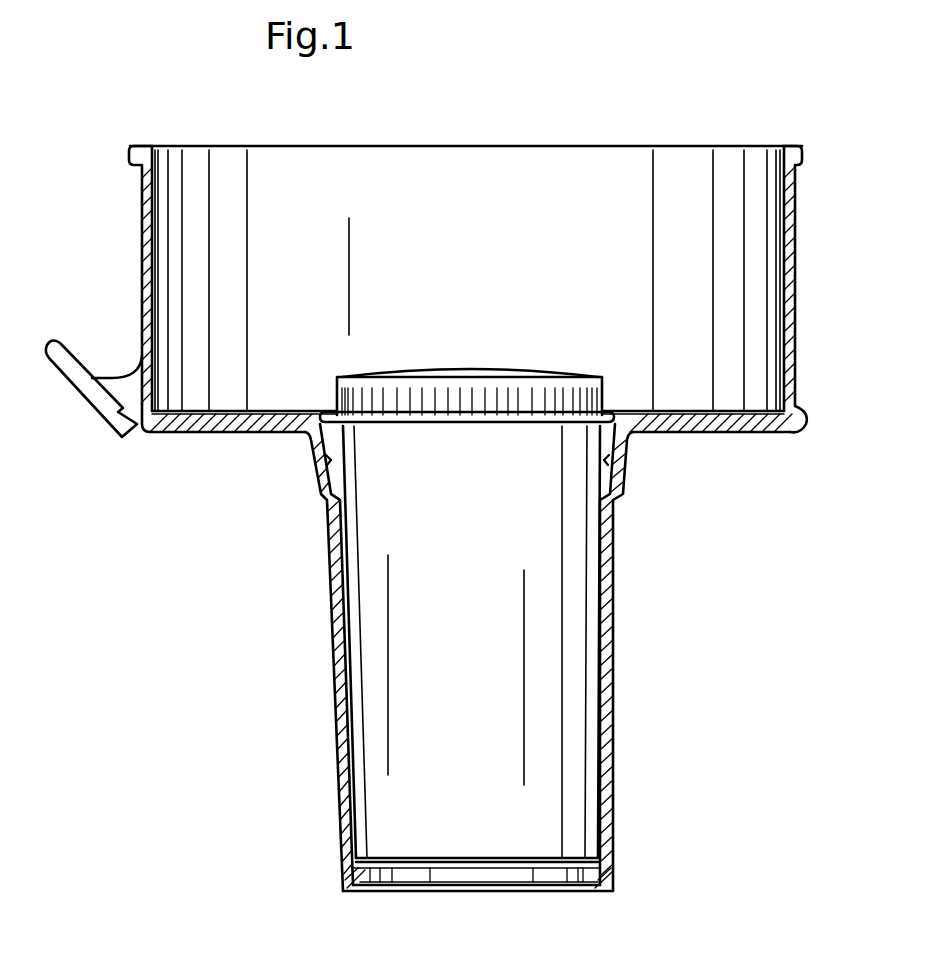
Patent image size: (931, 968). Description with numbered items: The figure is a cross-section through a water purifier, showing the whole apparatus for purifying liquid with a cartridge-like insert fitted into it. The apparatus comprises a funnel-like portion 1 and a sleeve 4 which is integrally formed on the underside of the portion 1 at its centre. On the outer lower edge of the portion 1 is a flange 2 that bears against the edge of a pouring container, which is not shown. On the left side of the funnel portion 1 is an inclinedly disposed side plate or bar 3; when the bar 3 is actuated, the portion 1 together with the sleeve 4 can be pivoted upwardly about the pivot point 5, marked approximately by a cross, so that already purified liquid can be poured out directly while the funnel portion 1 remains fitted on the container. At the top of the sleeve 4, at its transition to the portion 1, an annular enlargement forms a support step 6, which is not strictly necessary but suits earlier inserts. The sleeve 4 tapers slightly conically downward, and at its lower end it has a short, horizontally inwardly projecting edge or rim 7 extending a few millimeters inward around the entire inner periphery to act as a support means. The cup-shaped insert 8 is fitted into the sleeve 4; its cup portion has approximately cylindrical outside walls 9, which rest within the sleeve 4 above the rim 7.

The funnel-like portion 1 is at (240, 423).
The flange 2 is at (803, 426).
The side plate or bar 3 is at (84, 381).
The sleeve 4 is at (335, 619).
The pivot point 5 is at (147, 433).
The support step 6 is at (330, 492).
The edge or rim 7 is at (604, 858).
The cup-shaped insert 8 is at (613, 631).
The outside walls 9 is at (601, 697).